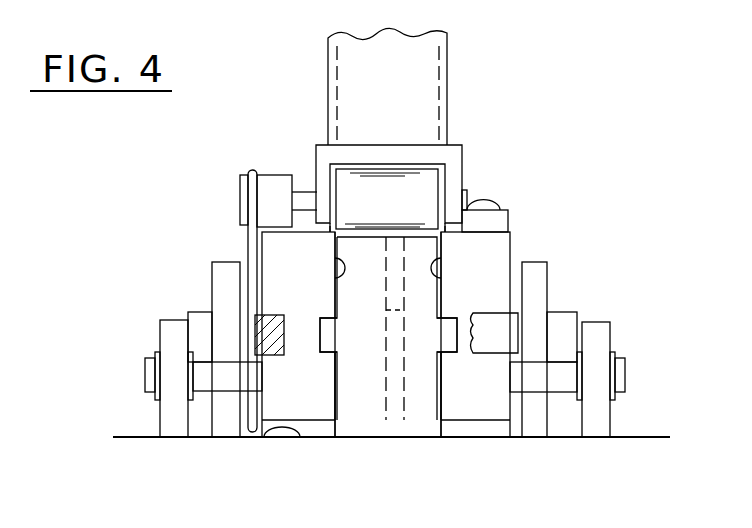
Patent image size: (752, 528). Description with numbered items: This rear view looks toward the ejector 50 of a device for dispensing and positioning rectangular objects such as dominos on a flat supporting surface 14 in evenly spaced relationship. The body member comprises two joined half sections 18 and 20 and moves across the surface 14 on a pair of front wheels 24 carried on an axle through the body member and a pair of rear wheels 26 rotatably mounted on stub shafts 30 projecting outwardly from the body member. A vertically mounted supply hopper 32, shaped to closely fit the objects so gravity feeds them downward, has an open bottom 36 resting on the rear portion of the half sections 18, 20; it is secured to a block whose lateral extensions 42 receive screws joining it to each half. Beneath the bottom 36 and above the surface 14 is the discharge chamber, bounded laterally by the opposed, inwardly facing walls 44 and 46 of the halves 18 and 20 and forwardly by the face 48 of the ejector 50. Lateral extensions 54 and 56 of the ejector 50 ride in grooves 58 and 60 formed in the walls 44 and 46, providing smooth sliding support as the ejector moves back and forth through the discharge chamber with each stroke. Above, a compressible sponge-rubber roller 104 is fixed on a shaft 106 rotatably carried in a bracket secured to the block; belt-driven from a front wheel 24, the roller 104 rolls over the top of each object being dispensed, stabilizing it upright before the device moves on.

The flat surface 14 is at (280, 430).
The half section 18 is at (280, 241).
The half section 20 is at (500, 250).
The front wheels 24 is at (212, 272).
The rear wheels 26 is at (158, 413).
The stub shafts 30 is at (145, 372).
The supply hopper 32 is at (447, 72).
The bottom 36 is at (332, 232).
The lateral extensions 42 is at (503, 208).
The inwardly facing wall 44 is at (336, 281).
The inwardly facing wall 46 is at (443, 284).
The face 48 is at (378, 400).
The ejector 50 is at (413, 398).
The lateral extension 54 is at (332, 333).
The lateral extension 56 is at (443, 334).
The groove 58 is at (327, 351).
The groove 60 is at (445, 354).
The roller 104 is at (440, 178).
The shaft 106 is at (310, 190).